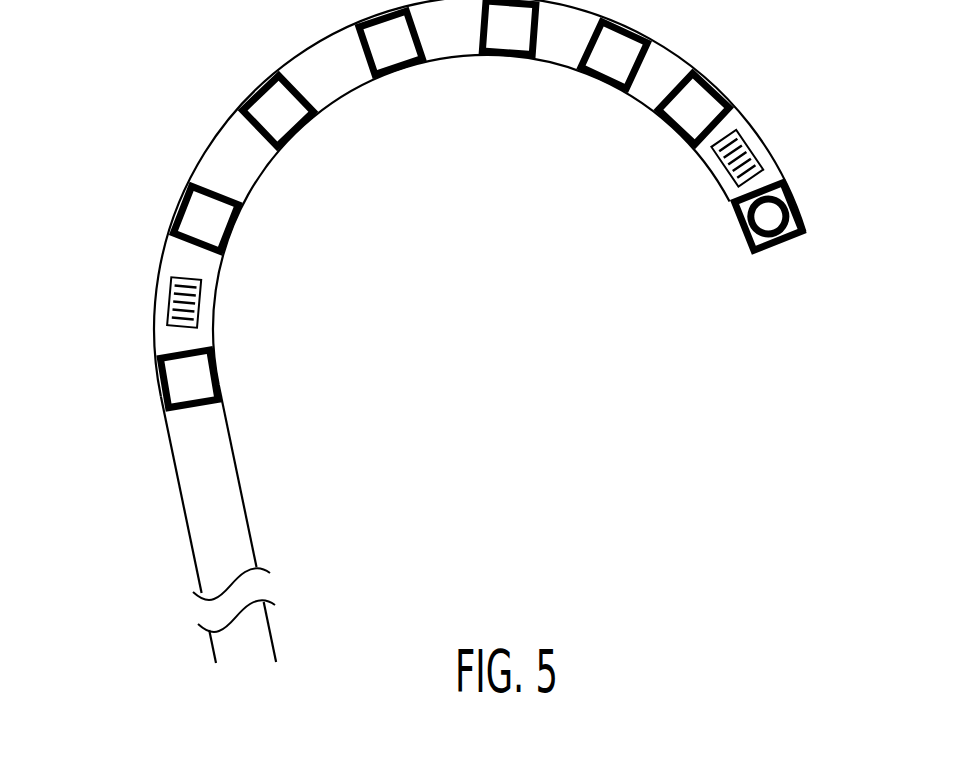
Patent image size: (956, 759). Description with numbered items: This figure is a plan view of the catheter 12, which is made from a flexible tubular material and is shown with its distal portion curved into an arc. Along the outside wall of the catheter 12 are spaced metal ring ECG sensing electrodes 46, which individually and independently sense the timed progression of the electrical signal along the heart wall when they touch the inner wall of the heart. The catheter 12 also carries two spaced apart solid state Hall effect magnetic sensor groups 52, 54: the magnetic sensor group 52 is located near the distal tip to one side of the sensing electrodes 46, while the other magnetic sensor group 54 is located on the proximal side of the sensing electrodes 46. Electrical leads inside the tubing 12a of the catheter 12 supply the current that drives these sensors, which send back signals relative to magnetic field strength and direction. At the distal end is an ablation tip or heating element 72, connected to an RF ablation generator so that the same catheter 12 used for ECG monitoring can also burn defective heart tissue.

The catheter 12 is at (435, 331).
The tubing 12a is at (258, 180).
The ECG sensing electrodes 46 is at (250, 100).
The magnetic sensor group 52 is at (750, 147).
The magnetic sensor group 54 is at (163, 302).
The ablation tip 72 is at (775, 217).